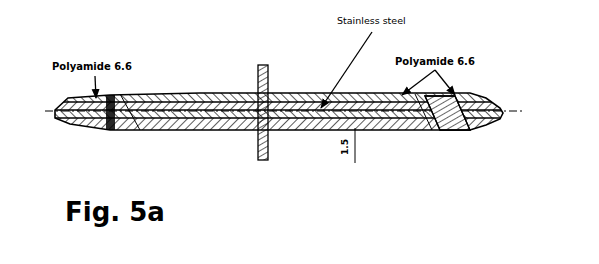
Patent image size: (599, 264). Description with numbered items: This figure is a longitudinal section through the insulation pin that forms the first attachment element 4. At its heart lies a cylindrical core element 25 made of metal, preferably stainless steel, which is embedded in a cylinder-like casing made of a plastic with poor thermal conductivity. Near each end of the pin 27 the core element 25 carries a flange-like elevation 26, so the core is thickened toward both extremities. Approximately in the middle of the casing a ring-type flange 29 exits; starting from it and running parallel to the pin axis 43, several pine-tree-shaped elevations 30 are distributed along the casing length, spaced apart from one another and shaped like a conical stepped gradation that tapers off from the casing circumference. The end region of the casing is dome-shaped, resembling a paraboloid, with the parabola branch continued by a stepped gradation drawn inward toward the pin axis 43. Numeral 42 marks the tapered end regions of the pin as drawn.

The first attachment element 4 is at (297, 171).
The cylindrical core element 25 is at (241, 107).
The flange-like elevation 26 is at (138, 94).
The end of the pin 27 is at (111, 131).
The ring flange 29 is at (269, 78).
The pine-tree-shaped elevations 30 is at (198, 94).
The tapered end 42 is at (62, 119).
The pin axis 43 is at (489, 103).